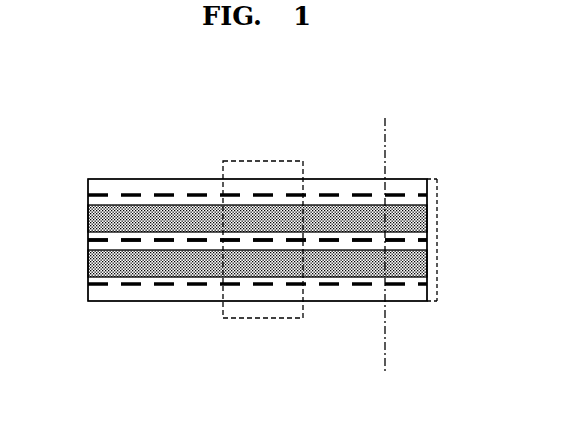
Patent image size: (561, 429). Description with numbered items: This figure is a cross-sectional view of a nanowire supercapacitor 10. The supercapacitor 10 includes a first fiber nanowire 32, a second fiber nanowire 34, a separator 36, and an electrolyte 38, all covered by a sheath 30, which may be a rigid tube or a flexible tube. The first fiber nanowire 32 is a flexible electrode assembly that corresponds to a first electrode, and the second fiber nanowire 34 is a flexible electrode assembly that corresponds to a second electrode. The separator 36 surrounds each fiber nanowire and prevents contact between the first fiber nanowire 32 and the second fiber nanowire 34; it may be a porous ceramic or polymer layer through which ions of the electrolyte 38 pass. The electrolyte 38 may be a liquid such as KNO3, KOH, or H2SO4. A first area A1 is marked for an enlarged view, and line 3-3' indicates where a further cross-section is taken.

The supercapacitor 10 is at (112, 121).
The sheath 30 is at (143, 301).
The first fiber nanowire 32 is at (403, 257).
The second fiber nanowire 34 is at (403, 213).
The separator 36 is at (163, 284).
The electrolyte 38 is at (113, 239).
The first area A1 is at (232, 318).
The line 3-3' 3 is at (385, 118).